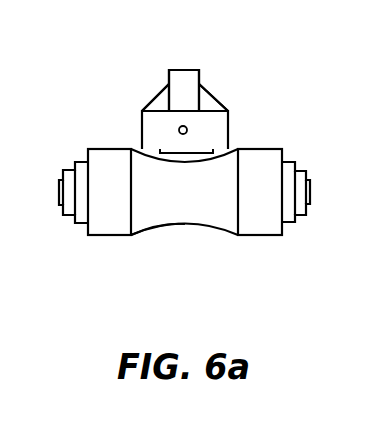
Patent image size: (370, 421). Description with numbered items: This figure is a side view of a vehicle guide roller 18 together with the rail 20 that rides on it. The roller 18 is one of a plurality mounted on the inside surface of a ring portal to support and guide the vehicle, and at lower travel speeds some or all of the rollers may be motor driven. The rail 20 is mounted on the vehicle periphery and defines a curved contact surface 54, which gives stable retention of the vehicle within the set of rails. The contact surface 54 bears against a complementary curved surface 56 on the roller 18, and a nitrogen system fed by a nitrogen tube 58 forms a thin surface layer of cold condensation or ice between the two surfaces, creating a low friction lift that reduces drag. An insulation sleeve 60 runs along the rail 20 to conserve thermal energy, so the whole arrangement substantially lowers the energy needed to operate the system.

The roller 18 is at (202, 212).
The rail 20 is at (187, 70).
The curved contact surface 54 is at (185, 162).
The complementary curved surface 56 is at (143, 240).
The nitrogen tube 58 is at (188, 129).
The insulation sleeve 60 is at (158, 95).